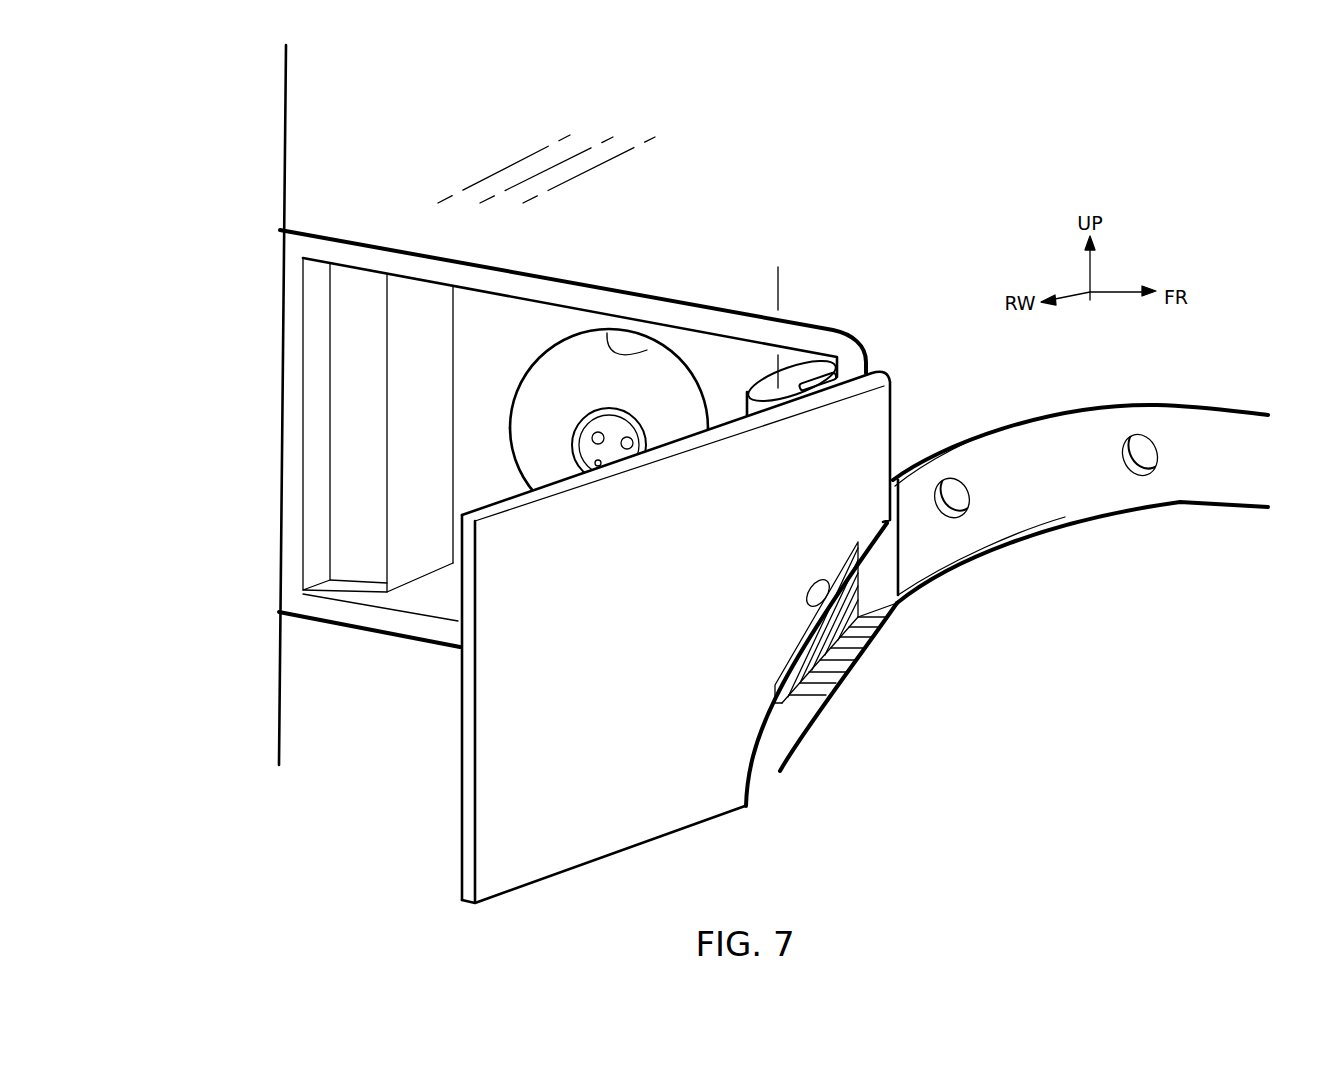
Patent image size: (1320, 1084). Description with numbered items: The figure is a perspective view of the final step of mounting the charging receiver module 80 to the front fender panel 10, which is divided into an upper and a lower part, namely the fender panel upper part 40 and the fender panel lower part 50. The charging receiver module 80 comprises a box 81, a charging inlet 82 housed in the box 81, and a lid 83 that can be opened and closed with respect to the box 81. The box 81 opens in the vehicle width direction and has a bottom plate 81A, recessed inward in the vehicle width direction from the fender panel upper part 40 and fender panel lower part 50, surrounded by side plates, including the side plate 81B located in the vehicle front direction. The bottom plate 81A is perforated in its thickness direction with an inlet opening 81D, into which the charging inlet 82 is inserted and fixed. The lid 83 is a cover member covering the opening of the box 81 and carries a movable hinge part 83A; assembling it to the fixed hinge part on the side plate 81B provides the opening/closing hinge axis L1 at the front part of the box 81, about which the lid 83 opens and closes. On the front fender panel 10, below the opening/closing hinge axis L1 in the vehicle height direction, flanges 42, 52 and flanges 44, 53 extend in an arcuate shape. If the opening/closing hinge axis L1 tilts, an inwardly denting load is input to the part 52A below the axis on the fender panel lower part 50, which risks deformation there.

The front fender panel 10 is at (217, 417).
The fender panel upper part 40 is at (317, 183).
The fender panel lower part 50 is at (320, 677).
The charging receiver module 80 is at (422, 597).
The box 81 is at (398, 262).
The bottom plate 81A is at (495, 327).
The side plate 81B is at (825, 368).
The inlet opening 81D is at (613, 357).
The charging inlet 82 is at (545, 390).
The lid 83 is at (705, 735).
The movable hinge part 83A is at (803, 373).
The opening/closing hinge axis L1 is at (778, 309).
The flange 53 is at (787, 742).
The flange 52 is at (878, 583).
The part below the axis 52A is at (822, 632).
The flange 42 is at (1067, 488).
The flange 44 is at (952, 568).